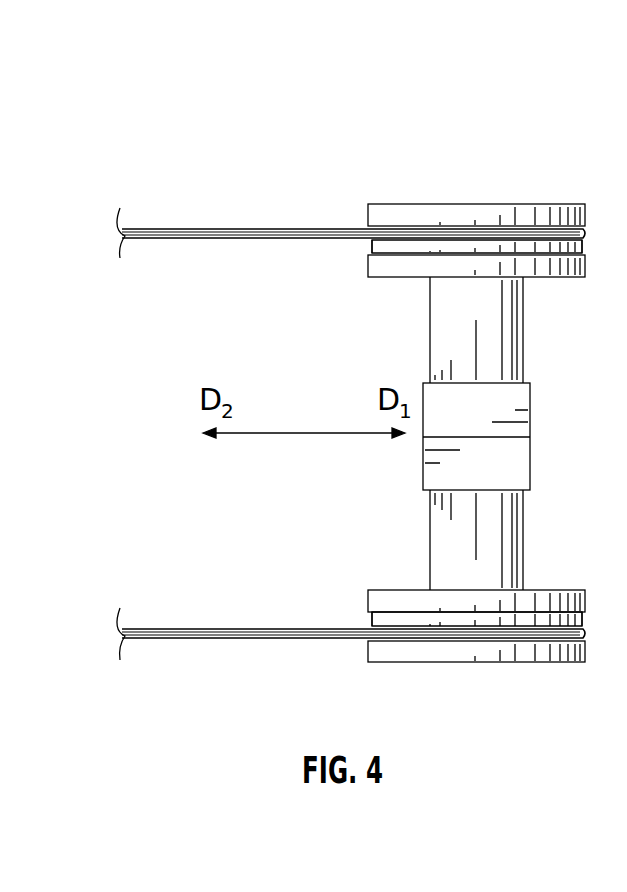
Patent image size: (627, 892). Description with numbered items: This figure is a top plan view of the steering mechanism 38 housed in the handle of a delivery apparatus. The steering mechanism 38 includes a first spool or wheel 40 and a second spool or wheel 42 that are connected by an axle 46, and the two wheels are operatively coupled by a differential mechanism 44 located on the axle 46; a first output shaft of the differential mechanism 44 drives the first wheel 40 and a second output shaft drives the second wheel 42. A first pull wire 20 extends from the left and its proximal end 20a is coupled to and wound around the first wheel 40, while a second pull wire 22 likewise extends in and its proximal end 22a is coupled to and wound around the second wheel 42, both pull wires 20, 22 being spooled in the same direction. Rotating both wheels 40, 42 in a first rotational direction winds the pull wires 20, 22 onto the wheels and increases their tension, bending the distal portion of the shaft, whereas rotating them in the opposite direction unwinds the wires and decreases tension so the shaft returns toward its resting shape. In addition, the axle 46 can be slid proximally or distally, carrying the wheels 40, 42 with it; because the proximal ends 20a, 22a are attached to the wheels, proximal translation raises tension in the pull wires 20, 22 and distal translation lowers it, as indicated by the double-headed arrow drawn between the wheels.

The steering mechanism 38 is at (289, 128).
The second pull wire 22 is at (191, 229).
The proximal end of the second pull wire 22a is at (485, 228).
The second spool or wheel 42 is at (570, 205).
The axle 46 is at (512, 330).
The differential mechanism 44 is at (515, 457).
The first spool or wheel 40 is at (575, 662).
The proximal end of the first pull wire 20a is at (560, 641).
The first pull wire 20 is at (222, 640).